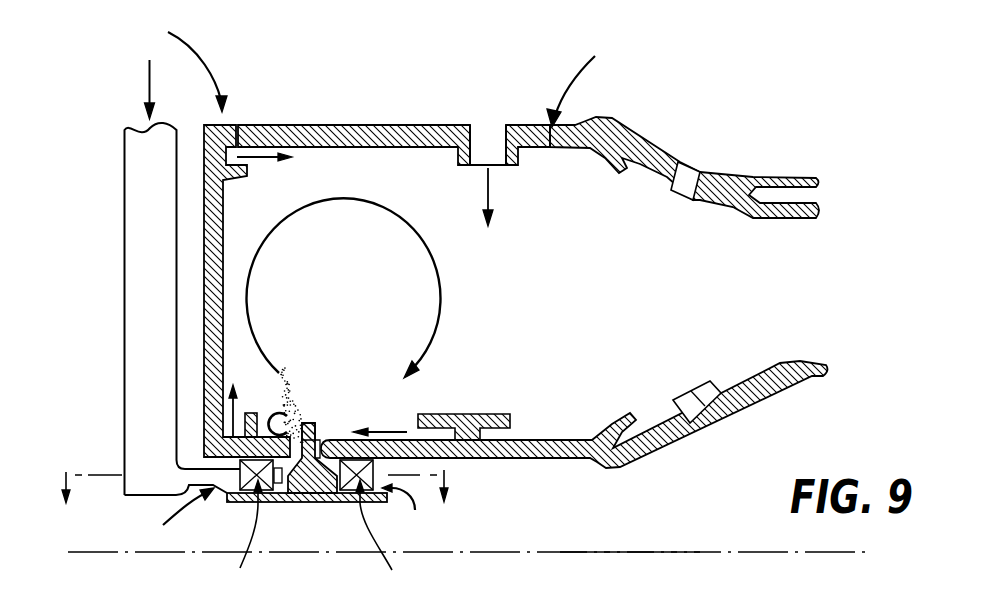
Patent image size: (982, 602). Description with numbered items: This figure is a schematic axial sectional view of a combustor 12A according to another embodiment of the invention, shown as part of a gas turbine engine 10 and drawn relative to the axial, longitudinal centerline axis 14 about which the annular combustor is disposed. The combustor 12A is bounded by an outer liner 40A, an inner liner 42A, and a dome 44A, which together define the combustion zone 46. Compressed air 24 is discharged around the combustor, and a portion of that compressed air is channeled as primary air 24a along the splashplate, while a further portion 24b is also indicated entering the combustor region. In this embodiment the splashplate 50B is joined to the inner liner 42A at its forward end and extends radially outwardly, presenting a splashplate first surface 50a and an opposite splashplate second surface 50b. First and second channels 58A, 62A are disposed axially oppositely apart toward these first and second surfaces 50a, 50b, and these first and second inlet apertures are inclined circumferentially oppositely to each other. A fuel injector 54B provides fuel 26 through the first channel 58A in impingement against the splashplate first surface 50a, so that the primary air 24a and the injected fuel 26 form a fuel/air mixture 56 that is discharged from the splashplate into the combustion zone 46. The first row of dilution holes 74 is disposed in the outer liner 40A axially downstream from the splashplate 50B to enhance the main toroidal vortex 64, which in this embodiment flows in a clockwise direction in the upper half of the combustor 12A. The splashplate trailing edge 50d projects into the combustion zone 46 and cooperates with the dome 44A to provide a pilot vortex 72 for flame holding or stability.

The gas turbine engine 10 is at (256, 502).
The combustor 12A is at (683, 125).
The centerline axis 14 is at (620, 552).
The compressed air 24 is at (214, 72).
The primary air 24a is at (187, 520).
The cooling air flow portion 24b is at (406, 514).
The fuel 26 is at (148, 100).
The outer liner 40A is at (362, 126).
The inner liner 42A is at (540, 440).
The dome 44A is at (204, 314).
The combustion zone 46 is at (569, 310).
The splashplate first surface 50a is at (292, 503).
The splashplate second surface 50b is at (338, 503).
The splashplate trailing edge 50d is at (306, 412).
The splashplate 50B is at (311, 432).
The fuel injector 54B is at (124, 230).
The fuel/air mixture 56 is at (308, 420).
The first channel 58A is at (247, 528).
The second channel 62A is at (377, 530).
The main toroidal vortex 64 is at (300, 215).
The pilot vortex 72 is at (278, 412).
The dilution holes 74 is at (490, 130).